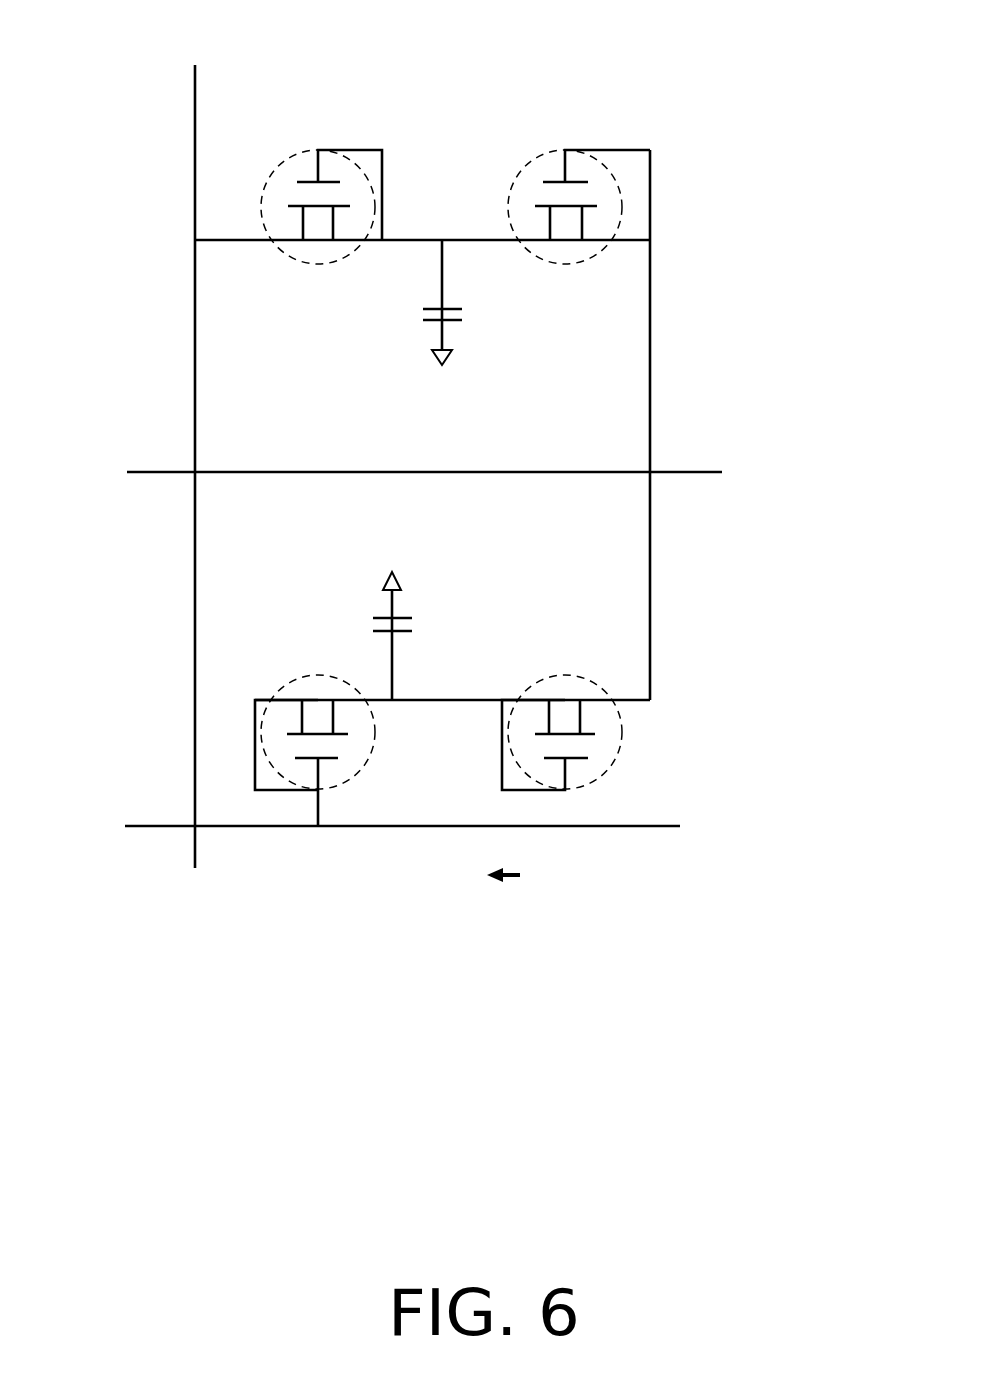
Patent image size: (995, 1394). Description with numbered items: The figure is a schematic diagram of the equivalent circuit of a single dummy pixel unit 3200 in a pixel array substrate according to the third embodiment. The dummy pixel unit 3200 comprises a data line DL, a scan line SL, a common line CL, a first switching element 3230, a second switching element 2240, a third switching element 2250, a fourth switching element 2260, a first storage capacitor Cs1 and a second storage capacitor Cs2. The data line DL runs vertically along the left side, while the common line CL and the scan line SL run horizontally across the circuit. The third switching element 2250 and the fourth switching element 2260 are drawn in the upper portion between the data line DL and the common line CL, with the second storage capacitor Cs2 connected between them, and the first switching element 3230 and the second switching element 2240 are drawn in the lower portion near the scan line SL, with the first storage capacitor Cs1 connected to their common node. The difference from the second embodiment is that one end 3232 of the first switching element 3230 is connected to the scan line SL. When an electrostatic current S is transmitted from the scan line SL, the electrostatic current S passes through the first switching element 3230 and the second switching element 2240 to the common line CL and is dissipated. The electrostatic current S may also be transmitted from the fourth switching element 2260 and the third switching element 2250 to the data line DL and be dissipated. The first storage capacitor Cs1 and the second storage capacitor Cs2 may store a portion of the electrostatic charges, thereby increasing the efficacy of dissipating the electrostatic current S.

The dummy pixel unit 3200 is at (460, 606).
The third switching element 2250 is at (303, 150).
The fourth switching element 2260 is at (498, 155).
The first switching element 3230 is at (221, 812).
The one end of first switching element 3232 is at (317, 775).
The second switching element 2240 is at (592, 783).
The data line DL is at (195, 148).
The common line CL is at (680, 472).
The scan line SL is at (660, 826).
The first storage capacitor Cs1 is at (386, 603).
The second storage capacitor Cs2 is at (448, 332).
The electrostatic current S is at (522, 872).